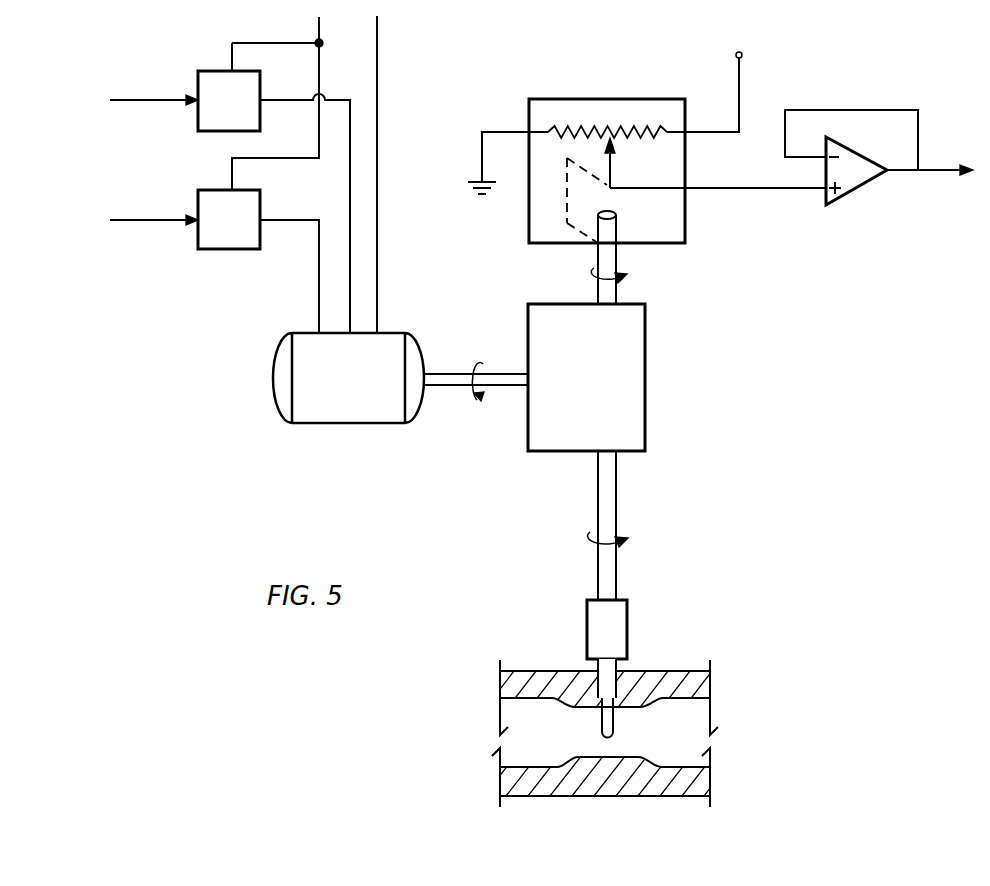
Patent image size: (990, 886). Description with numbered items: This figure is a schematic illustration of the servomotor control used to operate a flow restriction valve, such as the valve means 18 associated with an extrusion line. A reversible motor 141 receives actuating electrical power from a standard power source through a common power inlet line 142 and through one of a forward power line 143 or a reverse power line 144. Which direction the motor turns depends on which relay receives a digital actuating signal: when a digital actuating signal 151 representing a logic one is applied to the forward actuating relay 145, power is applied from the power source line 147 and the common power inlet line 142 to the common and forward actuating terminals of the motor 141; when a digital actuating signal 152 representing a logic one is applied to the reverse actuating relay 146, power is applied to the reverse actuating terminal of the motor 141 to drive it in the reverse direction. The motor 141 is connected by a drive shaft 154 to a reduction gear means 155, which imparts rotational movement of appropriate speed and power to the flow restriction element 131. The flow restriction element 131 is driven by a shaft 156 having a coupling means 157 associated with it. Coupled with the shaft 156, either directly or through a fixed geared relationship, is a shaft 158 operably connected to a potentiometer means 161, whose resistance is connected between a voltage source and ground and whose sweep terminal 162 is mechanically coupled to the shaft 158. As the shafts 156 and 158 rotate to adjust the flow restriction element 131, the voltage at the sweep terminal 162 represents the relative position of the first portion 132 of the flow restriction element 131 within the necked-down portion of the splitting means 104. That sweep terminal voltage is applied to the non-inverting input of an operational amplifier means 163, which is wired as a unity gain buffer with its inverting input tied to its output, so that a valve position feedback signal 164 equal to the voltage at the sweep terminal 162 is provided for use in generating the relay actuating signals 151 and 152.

The valve means 18 is at (506, 655).
The splitting means 104 is at (672, 796).
The flow restriction element 131 is at (618, 666).
The first portion of the flow restriction element 132 is at (600, 720).
The reversible motor 141 is at (272, 376).
The common power inlet line 142 is at (377, 37).
The forward power line 143 is at (350, 271).
The reverse power line 144 is at (319, 298).
The forward actuating relay 145 is at (198, 80).
The reverse actuating relay 146 is at (198, 198).
The power source line 147 is at (319, 28).
The digital actuating signal 151 is at (150, 101).
The digital actuating signal 152 is at (157, 221).
The drive shaft 154 is at (440, 375).
The reduction gear means 155 is at (645, 356).
The shaft 156 is at (616, 572).
The coupling means 157 is at (627, 618).
The shaft 158 is at (618, 259).
The potentiometer means 161 is at (595, 99).
The sweep terminal 162 is at (722, 188).
The operational amplifier means 163 is at (845, 192).
The valve position feedback signal 164 is at (930, 167).